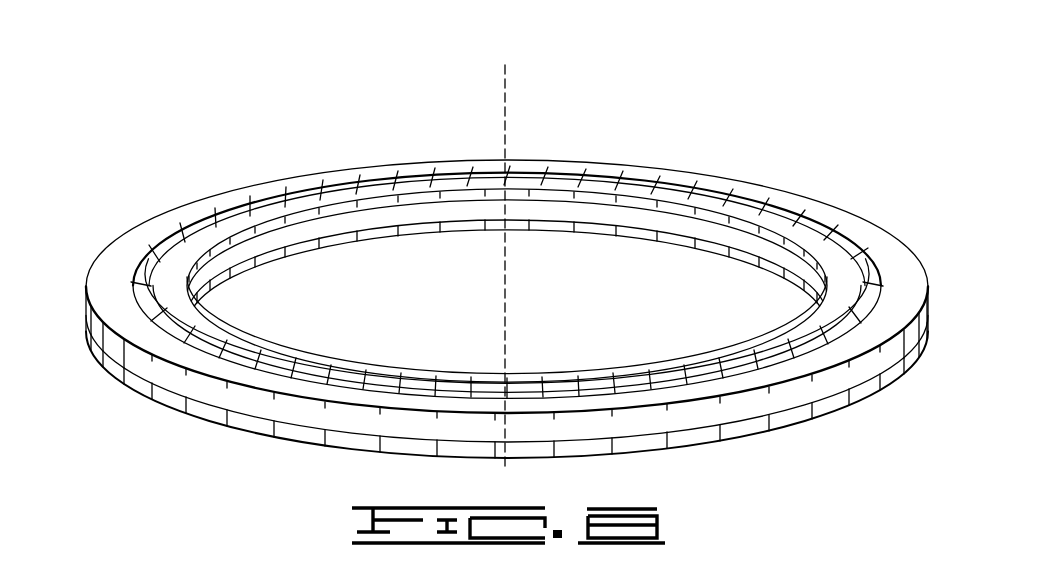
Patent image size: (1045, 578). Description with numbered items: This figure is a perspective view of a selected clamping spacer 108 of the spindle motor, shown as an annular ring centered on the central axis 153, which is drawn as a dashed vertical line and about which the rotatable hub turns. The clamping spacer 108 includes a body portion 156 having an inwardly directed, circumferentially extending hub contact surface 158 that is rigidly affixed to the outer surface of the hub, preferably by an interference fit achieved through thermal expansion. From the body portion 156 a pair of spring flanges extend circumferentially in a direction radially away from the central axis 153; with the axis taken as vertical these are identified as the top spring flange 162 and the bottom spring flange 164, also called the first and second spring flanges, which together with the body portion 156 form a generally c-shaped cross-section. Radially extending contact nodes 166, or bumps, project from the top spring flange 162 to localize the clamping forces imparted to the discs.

The clamping spacer 108 is at (645, 106).
The central axis 153 is at (503, 103).
The body portion 156 is at (683, 244).
The hub contact surface 158 is at (312, 234).
The top spring flange 162 is at (900, 262).
The bottom spring flange 164 is at (832, 383).
The contact node 166 is at (233, 205).